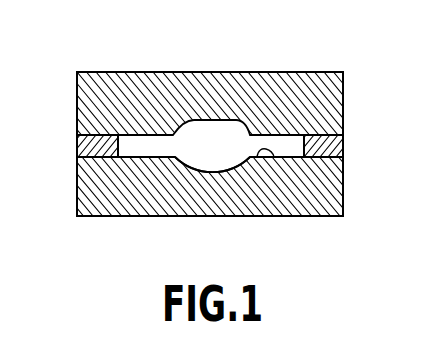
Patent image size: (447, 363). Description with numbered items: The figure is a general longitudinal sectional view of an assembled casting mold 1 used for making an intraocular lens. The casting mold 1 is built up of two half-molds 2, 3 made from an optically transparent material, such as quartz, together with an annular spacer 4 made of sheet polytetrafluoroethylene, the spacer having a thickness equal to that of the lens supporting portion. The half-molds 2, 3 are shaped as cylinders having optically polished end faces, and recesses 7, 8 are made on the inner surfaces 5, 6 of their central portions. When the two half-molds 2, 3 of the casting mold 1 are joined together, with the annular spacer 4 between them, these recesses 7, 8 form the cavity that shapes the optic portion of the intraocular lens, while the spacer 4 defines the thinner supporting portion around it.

The casting mold 1 is at (142, 62).
The half-mold 2 is at (297, 88).
The half-mold 3 is at (323, 195).
The annular spacer 4 is at (343, 135).
The inner surface 5 is at (293, 137).
The inner surface 6 is at (257, 157).
The recess 7 is at (228, 120).
The recess 8 is at (187, 172).